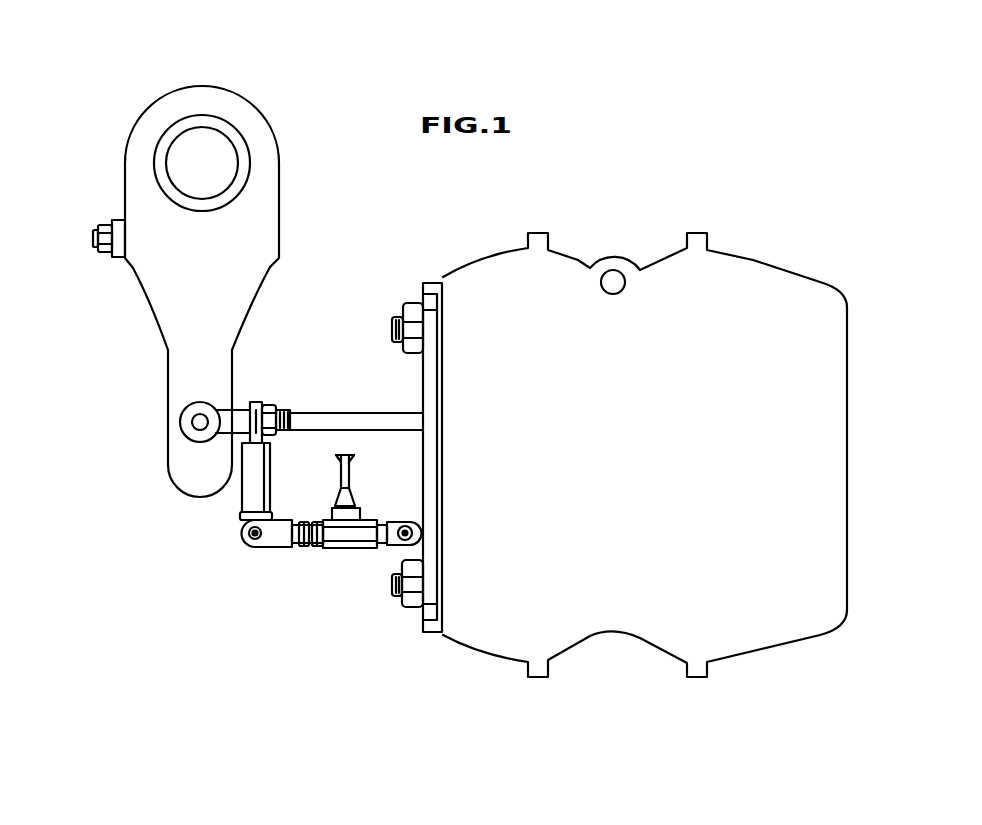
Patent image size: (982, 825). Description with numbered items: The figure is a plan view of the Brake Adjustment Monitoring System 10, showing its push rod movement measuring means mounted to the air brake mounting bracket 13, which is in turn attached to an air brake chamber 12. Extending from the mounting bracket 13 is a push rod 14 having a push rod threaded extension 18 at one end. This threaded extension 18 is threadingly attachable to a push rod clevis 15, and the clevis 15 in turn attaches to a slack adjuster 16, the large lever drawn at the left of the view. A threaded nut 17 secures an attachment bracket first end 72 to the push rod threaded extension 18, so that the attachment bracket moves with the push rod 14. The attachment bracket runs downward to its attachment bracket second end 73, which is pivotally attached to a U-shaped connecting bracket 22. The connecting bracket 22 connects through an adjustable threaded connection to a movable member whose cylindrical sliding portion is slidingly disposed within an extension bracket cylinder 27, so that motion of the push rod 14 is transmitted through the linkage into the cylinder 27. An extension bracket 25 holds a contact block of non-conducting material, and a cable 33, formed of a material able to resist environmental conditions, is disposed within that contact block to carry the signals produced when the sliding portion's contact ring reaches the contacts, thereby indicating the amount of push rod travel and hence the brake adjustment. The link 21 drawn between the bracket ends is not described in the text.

The Brake Adjustment Monitoring System 10 is at (292, 583).
The air brake chamber 12 is at (580, 257).
The air brake mounting bracket 13 is at (430, 283).
The push rod 14 is at (358, 412).
The push rod clevis 15 is at (237, 405).
The slack adjuster 16 is at (242, 98).
The threaded nut 17 is at (280, 405).
The push rod threaded extension 18 is at (283, 431).
The link arm 21 is at (240, 485).
The U-shaped connecting bracket 22 is at (263, 550).
The extension bracket 25 is at (390, 522).
The extension bracket cylinder 27 is at (347, 549).
The cable 33 is at (348, 472).
The attachment bracket first end 72 is at (258, 402).
The attachment bracket second end 73 is at (241, 516).